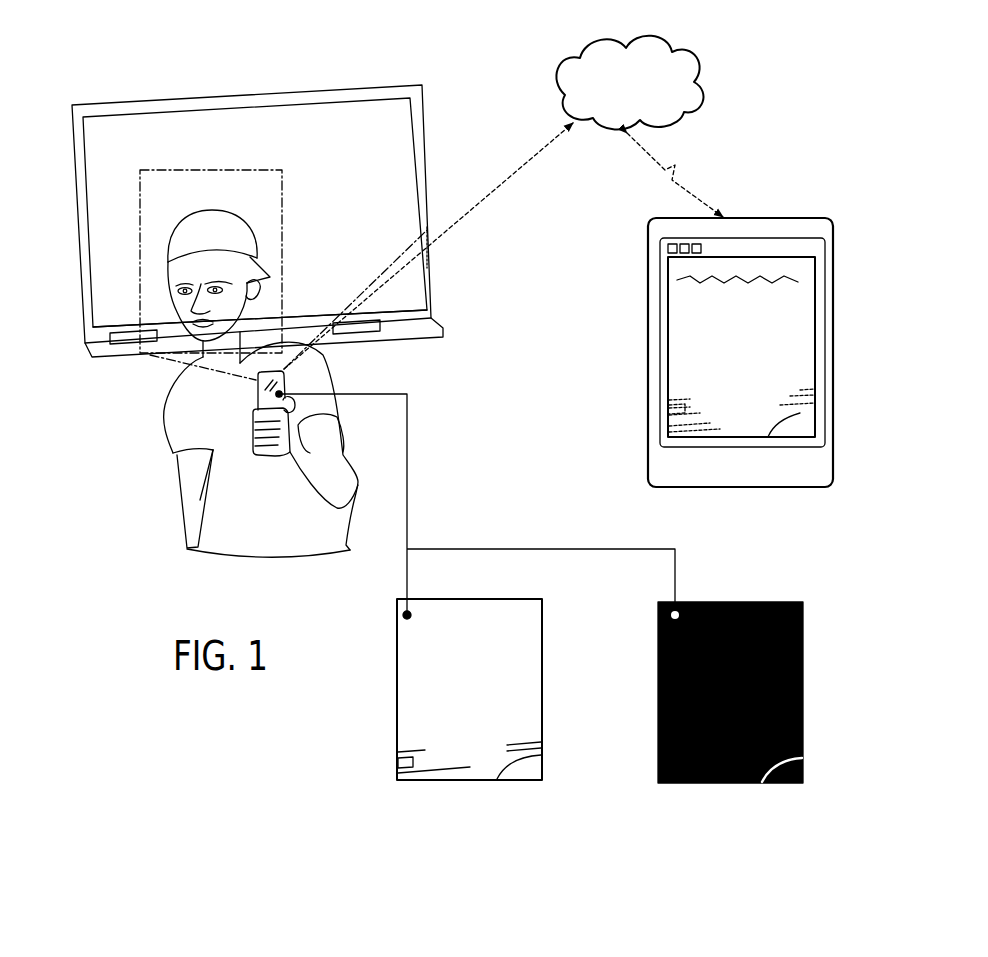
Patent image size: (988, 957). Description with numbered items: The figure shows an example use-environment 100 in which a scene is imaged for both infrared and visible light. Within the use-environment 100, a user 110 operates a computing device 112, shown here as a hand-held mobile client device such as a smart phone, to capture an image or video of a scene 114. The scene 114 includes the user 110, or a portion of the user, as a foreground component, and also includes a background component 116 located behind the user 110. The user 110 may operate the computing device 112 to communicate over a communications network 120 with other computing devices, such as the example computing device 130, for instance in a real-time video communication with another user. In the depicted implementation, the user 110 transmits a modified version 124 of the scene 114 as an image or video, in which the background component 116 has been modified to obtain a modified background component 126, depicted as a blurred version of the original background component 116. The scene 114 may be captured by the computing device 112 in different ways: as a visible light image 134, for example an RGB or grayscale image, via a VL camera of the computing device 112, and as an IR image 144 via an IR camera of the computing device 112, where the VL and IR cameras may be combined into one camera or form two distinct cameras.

The use-environment 100 is at (422, 40).
The user 110 is at (283, 365).
The computing device 112 is at (257, 385).
The scene 114 is at (260, 170).
The background component 116 is at (157, 282).
The communications network 120 is at (613, 104).
The modified version of scene 124 is at (793, 257).
The modified background component 126 is at (685, 343).
The computing device 130 is at (730, 218).
The visible light image 134 is at (518, 598).
The infrared image 144 is at (782, 601).